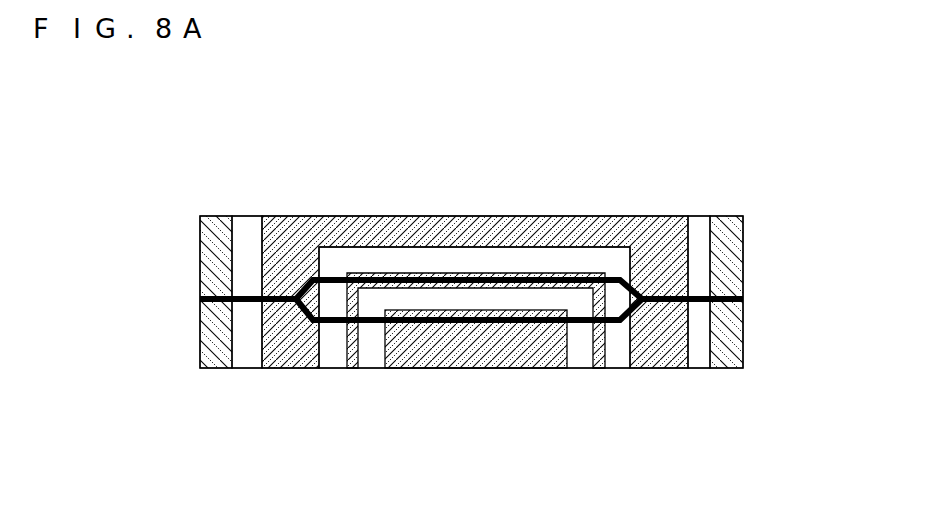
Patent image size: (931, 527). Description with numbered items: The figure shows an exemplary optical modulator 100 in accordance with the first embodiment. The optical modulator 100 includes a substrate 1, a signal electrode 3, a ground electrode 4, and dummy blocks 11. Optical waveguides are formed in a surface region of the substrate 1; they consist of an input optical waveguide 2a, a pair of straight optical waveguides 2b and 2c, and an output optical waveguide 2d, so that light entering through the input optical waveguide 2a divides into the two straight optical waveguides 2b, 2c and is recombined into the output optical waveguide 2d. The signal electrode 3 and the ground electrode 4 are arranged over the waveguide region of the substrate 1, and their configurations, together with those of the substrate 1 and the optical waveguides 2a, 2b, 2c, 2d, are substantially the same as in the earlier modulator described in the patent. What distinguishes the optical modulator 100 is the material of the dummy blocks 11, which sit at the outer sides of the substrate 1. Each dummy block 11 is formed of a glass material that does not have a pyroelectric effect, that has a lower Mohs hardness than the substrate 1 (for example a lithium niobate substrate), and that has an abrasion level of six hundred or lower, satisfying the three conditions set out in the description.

The optical modulator 100 is at (610, 108).
The substrate 1 is at (743, 348).
The dummy block 11 is at (212, 216).
The input optical waveguide 2a is at (250, 297).
The straight optical waveguide 2b is at (333, 278).
The straight optical waveguide 2c is at (335, 322).
The output optical waveguide 2d is at (698, 297).
The signal electrode 3 is at (358, 353).
The ground electrode 4 is at (473, 222).